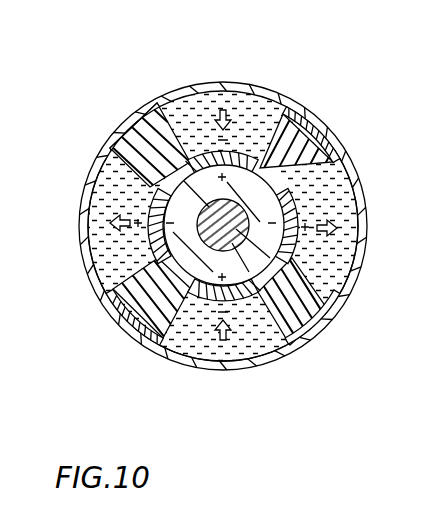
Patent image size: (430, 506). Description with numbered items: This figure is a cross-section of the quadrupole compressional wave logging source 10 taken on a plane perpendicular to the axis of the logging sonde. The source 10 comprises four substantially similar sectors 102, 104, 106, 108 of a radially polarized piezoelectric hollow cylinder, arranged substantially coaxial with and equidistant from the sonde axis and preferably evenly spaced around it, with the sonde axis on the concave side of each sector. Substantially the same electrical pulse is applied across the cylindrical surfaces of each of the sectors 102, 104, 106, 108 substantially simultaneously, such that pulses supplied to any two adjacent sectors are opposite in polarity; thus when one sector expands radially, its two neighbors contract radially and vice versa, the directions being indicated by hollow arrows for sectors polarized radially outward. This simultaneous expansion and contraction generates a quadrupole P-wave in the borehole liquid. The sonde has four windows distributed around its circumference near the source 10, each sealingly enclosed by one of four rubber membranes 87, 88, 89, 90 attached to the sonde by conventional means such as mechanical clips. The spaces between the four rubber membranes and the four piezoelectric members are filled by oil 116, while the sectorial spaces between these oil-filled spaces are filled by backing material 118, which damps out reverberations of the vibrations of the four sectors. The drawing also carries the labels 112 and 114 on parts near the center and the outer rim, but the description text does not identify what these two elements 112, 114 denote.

The source 10 is at (185, 167).
The rubber membrane 87 is at (362, 247).
The rubber membrane 88 is at (80, 213).
The rubber membrane 89 is at (220, 370).
The rubber membrane 90 is at (198, 81).
The sector 102 is at (240, 148).
The sector 104 is at (160, 258).
The sector 106 is at (258, 303).
The sector 108 is at (298, 210).
The rotor 112 is at (249, 188).
The arc segment 114 is at (306, 320).
The oil 116 is at (270, 112).
The backing material 118 is at (147, 141).